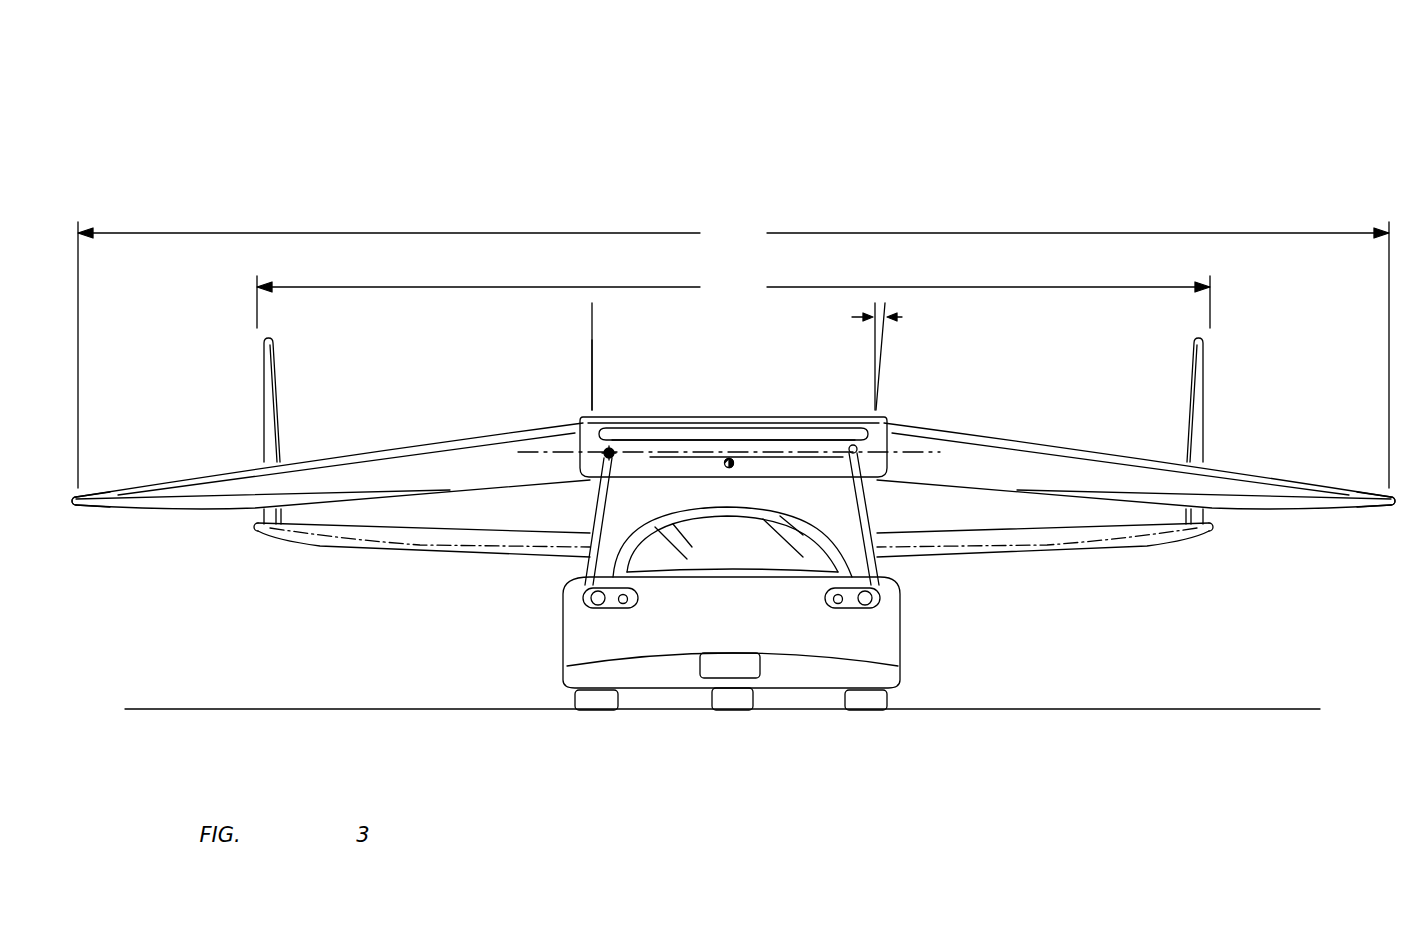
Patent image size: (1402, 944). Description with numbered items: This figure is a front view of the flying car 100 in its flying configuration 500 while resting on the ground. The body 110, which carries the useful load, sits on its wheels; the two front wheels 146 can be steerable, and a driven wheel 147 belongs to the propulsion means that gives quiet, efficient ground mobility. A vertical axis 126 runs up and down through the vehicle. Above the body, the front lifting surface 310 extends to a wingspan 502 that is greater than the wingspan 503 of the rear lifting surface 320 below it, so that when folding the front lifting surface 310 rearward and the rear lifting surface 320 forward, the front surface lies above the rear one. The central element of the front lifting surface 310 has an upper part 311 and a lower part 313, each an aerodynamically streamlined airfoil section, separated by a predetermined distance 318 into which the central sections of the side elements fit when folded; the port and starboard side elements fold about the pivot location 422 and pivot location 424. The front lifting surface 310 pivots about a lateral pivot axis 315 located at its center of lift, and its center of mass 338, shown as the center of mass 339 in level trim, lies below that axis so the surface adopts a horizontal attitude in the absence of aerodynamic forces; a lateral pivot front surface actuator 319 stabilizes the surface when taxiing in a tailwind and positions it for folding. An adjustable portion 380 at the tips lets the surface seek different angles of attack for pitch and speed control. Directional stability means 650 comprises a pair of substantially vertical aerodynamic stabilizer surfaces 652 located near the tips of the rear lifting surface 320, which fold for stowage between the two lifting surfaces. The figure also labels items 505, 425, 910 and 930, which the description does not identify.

The flying car 100 is at (452, 90).
The body 110 is at (532, 642).
The vertical axis 126 is at (593, 323).
The front wheels 146 is at (596, 702).
The driven wheel 147 is at (736, 702).
The front lifting surface 310 is at (733, 435).
The upper wing span portion 505 is at (440, 440).
The upper part 311 is at (656, 418).
The lower part 313 is at (810, 440).
The lateral pivot axis 315 is at (700, 457).
The predetermined distance 318 is at (729, 428).
The lateral pivot front surface actuator 319 is at (601, 462).
The rear lifting surface 320 is at (403, 551).
The center of mass 338 is at (785, 481).
The center of mass in level trim position 339 is at (734, 466).
The adjustable portion 380 is at (123, 503).
The pivot location of forward port side element 422 is at (882, 353).
The pivot location of forward starboard side element 424 is at (591, 348).
The offset distance 425 is at (903, 319).
The flying configuration 500 is at (1100, 617).
The wingspan of the front lifting surface 502 is at (733, 355).
The wingspan of the rear lifting surface 503 is at (733, 302).
The directional stability means 650 is at (735, 431).
The vertical aerodynamic stabilizer surfaces 652 is at (277, 390).
The tail light 910 is at (600, 601).
The license plate 930 is at (716, 652).